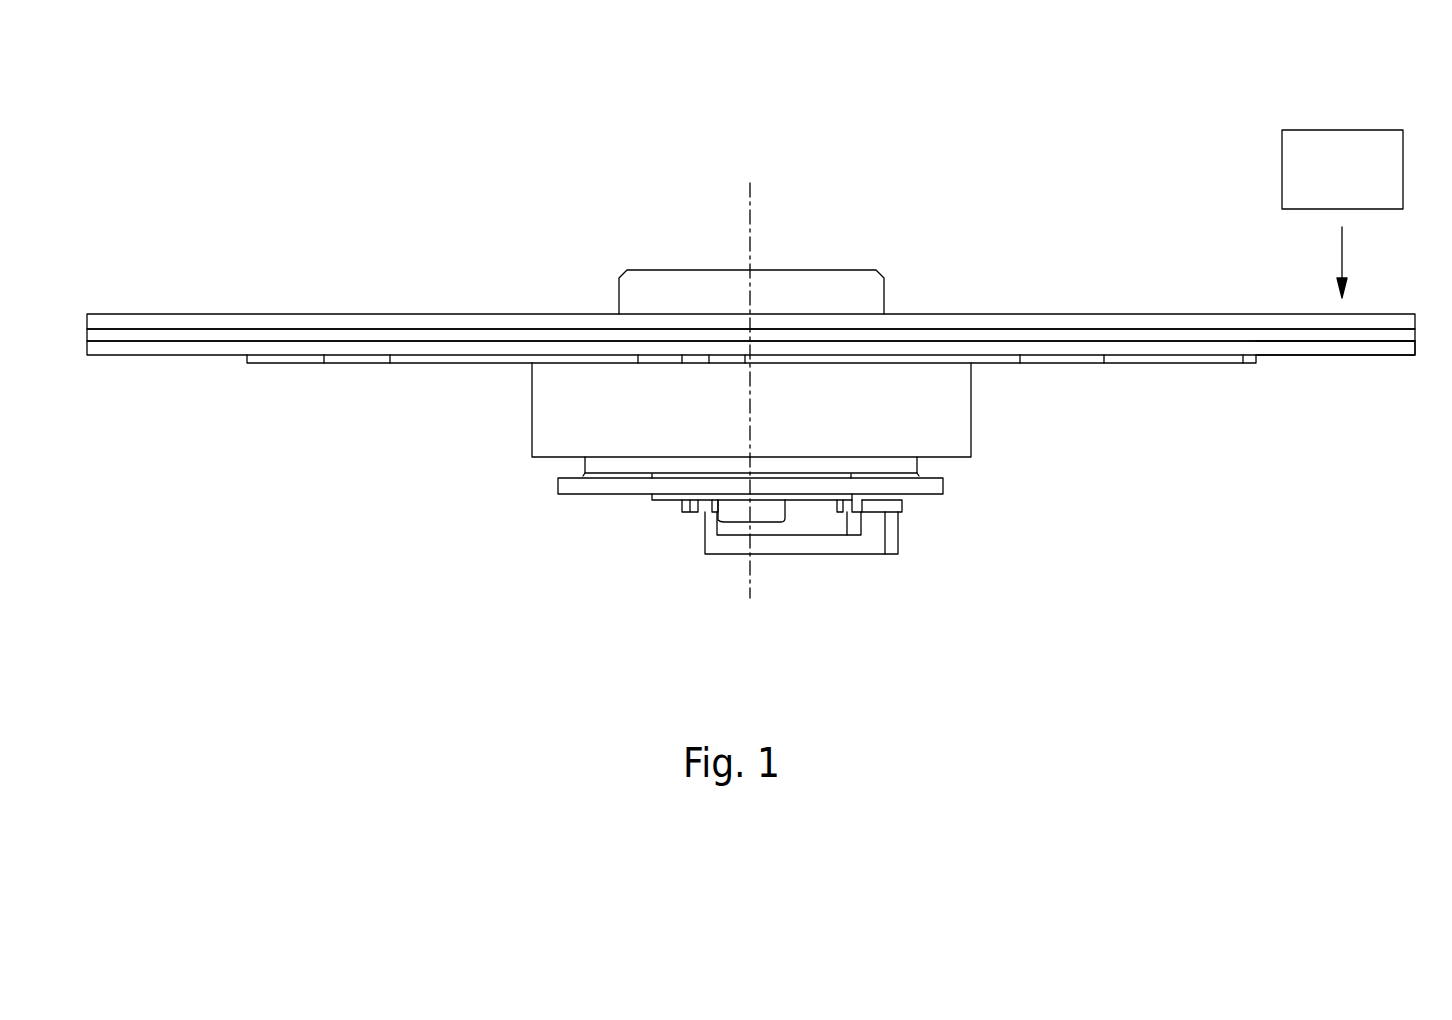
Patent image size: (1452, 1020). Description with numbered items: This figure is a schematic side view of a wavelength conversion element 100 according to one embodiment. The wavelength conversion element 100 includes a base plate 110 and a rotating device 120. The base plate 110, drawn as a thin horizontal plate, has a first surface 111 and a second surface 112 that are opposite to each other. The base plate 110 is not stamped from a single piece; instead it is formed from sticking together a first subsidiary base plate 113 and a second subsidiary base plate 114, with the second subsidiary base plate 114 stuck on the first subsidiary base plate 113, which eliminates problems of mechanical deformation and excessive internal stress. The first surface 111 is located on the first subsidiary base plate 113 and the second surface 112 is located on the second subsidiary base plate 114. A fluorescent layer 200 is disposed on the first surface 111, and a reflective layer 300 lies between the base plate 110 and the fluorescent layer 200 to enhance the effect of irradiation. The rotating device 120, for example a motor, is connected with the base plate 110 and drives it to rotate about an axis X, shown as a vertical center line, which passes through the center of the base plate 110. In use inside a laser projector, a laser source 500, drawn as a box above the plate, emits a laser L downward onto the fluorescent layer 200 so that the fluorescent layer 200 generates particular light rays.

The wavelength conversion element 100 is at (420, 160).
The base plate 110 is at (1318, 490).
The first surface 111 is at (1090, 343).
The second surface 112 is at (1086, 361).
The first subsidiary base plate 113 is at (1290, 346).
The second subsidiary base plate 114 is at (1227, 361).
The rotating device 120 is at (851, 290).
The fluorescent layer 200 is at (1022, 320).
The reflective layer 300 is at (961, 336).
The laser source 500 is at (1295, 172).
The axis X is at (750, 200).
The laser L is at (1342, 254).